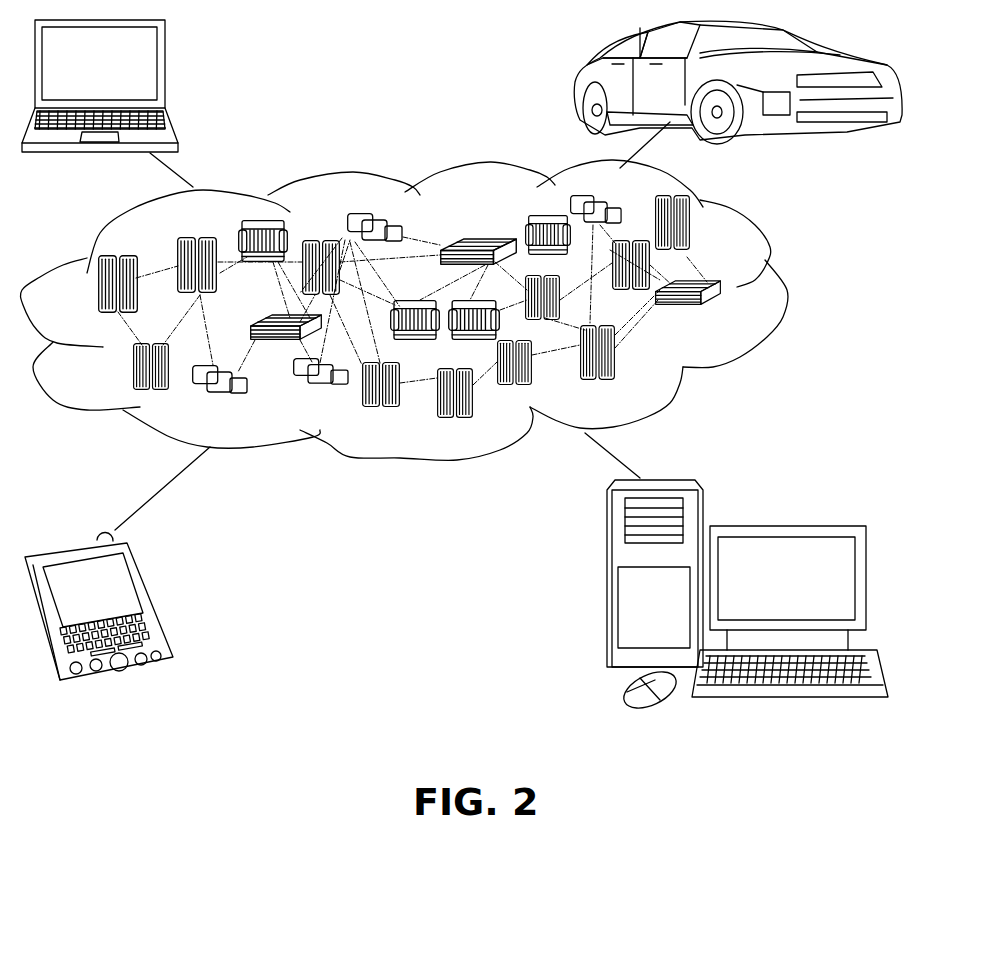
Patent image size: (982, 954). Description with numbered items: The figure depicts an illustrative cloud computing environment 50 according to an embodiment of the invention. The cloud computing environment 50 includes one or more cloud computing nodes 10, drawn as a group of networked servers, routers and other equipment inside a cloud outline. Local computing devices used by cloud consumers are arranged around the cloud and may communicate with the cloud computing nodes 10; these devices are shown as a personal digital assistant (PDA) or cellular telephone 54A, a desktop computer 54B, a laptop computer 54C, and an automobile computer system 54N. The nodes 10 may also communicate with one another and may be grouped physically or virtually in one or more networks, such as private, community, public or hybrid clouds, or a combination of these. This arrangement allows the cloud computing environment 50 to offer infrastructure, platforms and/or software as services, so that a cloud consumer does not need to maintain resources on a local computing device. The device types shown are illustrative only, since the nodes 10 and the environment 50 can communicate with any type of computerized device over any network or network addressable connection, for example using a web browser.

The cloud computing node 10 is at (738, 318).
The cloud computing environment 50 is at (787, 292).
The personal digital assistant (PDA) or cellular telephone 54A is at (147, 602).
The desktop computer 54B is at (783, 525).
The laptop computer 54C is at (163, 68).
The automobile computer system 54N is at (580, 83).